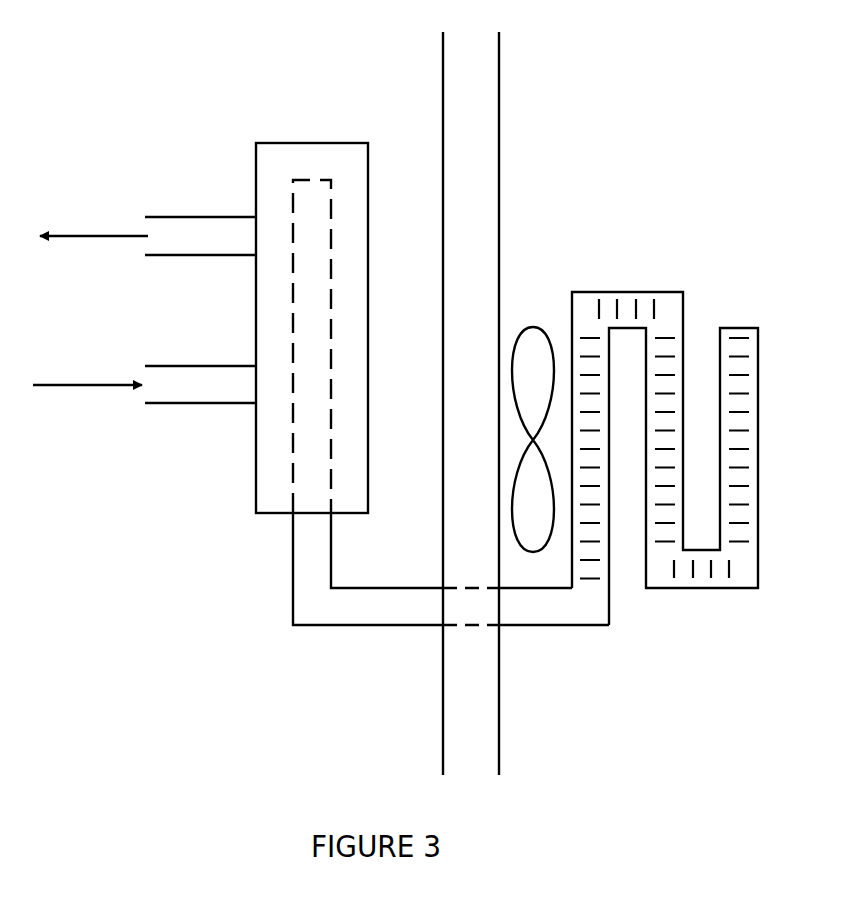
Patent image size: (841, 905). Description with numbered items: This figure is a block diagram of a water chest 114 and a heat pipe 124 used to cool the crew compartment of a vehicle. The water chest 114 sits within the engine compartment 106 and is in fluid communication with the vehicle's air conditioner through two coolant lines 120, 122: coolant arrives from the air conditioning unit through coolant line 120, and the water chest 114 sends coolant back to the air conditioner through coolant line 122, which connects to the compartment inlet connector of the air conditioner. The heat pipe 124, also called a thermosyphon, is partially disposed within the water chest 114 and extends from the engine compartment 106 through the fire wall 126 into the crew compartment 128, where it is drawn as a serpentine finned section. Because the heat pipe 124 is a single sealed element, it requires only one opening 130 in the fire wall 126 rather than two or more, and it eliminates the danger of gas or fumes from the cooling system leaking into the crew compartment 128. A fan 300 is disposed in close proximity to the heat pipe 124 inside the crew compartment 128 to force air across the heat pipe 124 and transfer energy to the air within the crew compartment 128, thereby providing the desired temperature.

The engine compartment 106 is at (251, 81).
The water chest 114 is at (276, 161).
The coolant line 120 is at (144, 401).
The coolant line 122 is at (148, 216).
The heat pipe 124 is at (312, 617).
The fire wall 126 is at (491, 81).
The crew compartment 128 is at (678, 81).
The opening 130 is at (507, 635).
The fan 300 is at (538, 327).